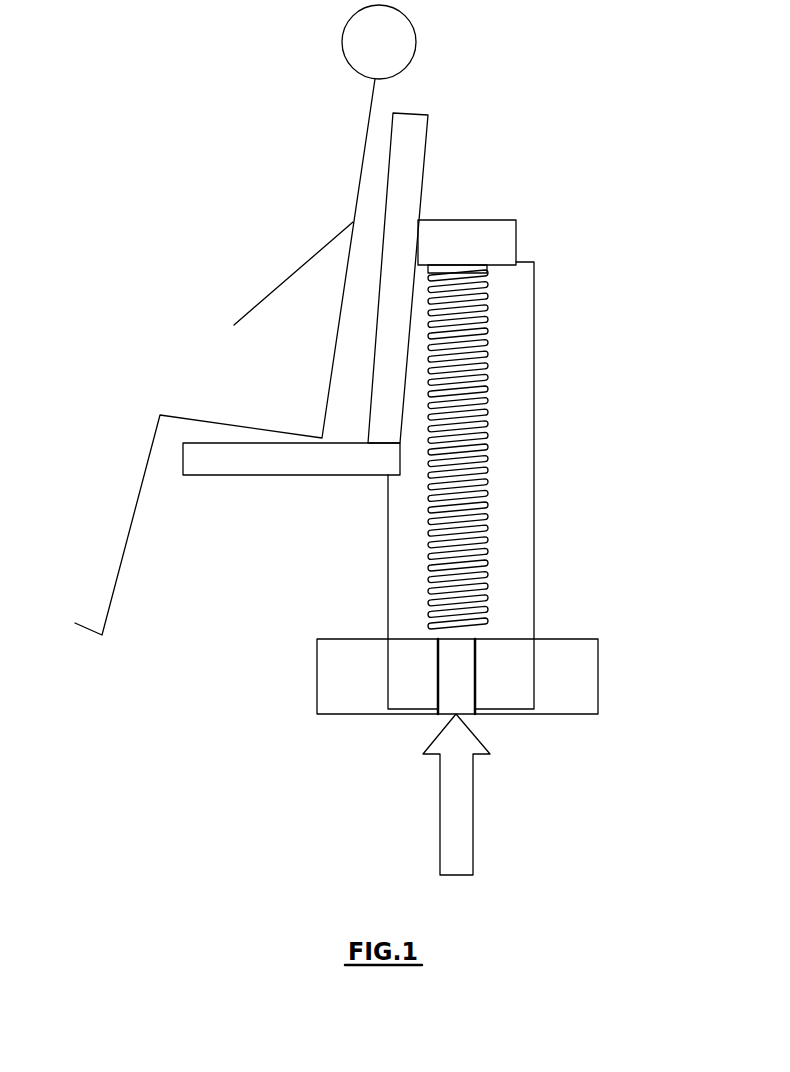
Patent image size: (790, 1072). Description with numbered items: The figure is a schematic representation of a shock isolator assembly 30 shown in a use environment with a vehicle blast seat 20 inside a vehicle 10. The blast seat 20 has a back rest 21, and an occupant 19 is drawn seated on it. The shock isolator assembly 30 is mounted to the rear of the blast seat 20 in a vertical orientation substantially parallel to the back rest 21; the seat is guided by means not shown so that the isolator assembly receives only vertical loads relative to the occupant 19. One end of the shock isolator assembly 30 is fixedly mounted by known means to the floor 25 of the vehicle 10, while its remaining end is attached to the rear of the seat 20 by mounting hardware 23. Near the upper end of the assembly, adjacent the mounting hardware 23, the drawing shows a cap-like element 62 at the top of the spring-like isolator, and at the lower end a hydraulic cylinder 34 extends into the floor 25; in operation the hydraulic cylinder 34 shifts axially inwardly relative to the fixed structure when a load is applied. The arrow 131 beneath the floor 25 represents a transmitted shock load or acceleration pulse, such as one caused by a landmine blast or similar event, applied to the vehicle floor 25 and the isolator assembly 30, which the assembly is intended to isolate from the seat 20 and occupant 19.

The vehicle 10 is at (178, 24).
The occupant 19 is at (353, 212).
The vehicle blast seat 20 is at (263, 466).
The back rest 21 is at (415, 165).
The mounting hardware 23 is at (508, 239).
The floor 25 is at (586, 692).
The shock isolator assembly 30 is at (487, 580).
The hydraulic cylinder 34 is at (458, 678).
The spring seat cap 62 is at (485, 278).
The arrow 131 is at (468, 815).